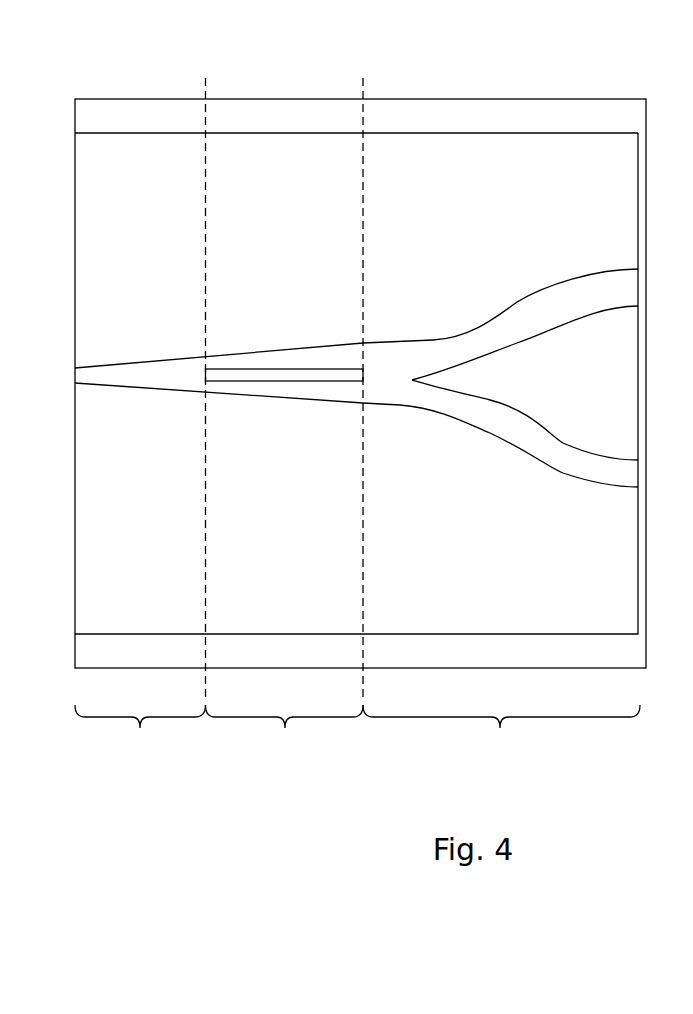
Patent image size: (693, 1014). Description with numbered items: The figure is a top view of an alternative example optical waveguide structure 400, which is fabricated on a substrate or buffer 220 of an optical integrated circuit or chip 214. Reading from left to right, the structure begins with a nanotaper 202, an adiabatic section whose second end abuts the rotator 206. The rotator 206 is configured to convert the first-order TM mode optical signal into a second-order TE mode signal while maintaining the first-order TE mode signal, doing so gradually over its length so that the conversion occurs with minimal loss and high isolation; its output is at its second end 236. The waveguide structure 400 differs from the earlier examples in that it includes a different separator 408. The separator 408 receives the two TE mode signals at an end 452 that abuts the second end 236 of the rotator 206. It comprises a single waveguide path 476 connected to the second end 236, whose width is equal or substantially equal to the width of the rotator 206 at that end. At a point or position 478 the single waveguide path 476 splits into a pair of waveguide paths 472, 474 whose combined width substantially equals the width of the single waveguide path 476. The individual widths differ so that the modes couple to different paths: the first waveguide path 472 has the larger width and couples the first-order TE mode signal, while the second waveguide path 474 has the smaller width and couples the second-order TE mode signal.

The optical waveguide structure 400 is at (550, 133).
The optical integrated circuit or chip 214 is at (280, 99).
The substrate or buffer 220 is at (413, 167).
The nanotaper 202 is at (140, 736).
The rotator 206 is at (285, 736).
The separator 408 is at (501, 736).
The second end of the rotator 236 is at (362, 360).
The end of the separator 452 is at (390, 345).
The split point 478 is at (412, 380).
The first waveguide path 472 is at (518, 322).
The second waveguide path 474 is at (513, 433).
The single waveguide path 476 is at (385, 377).